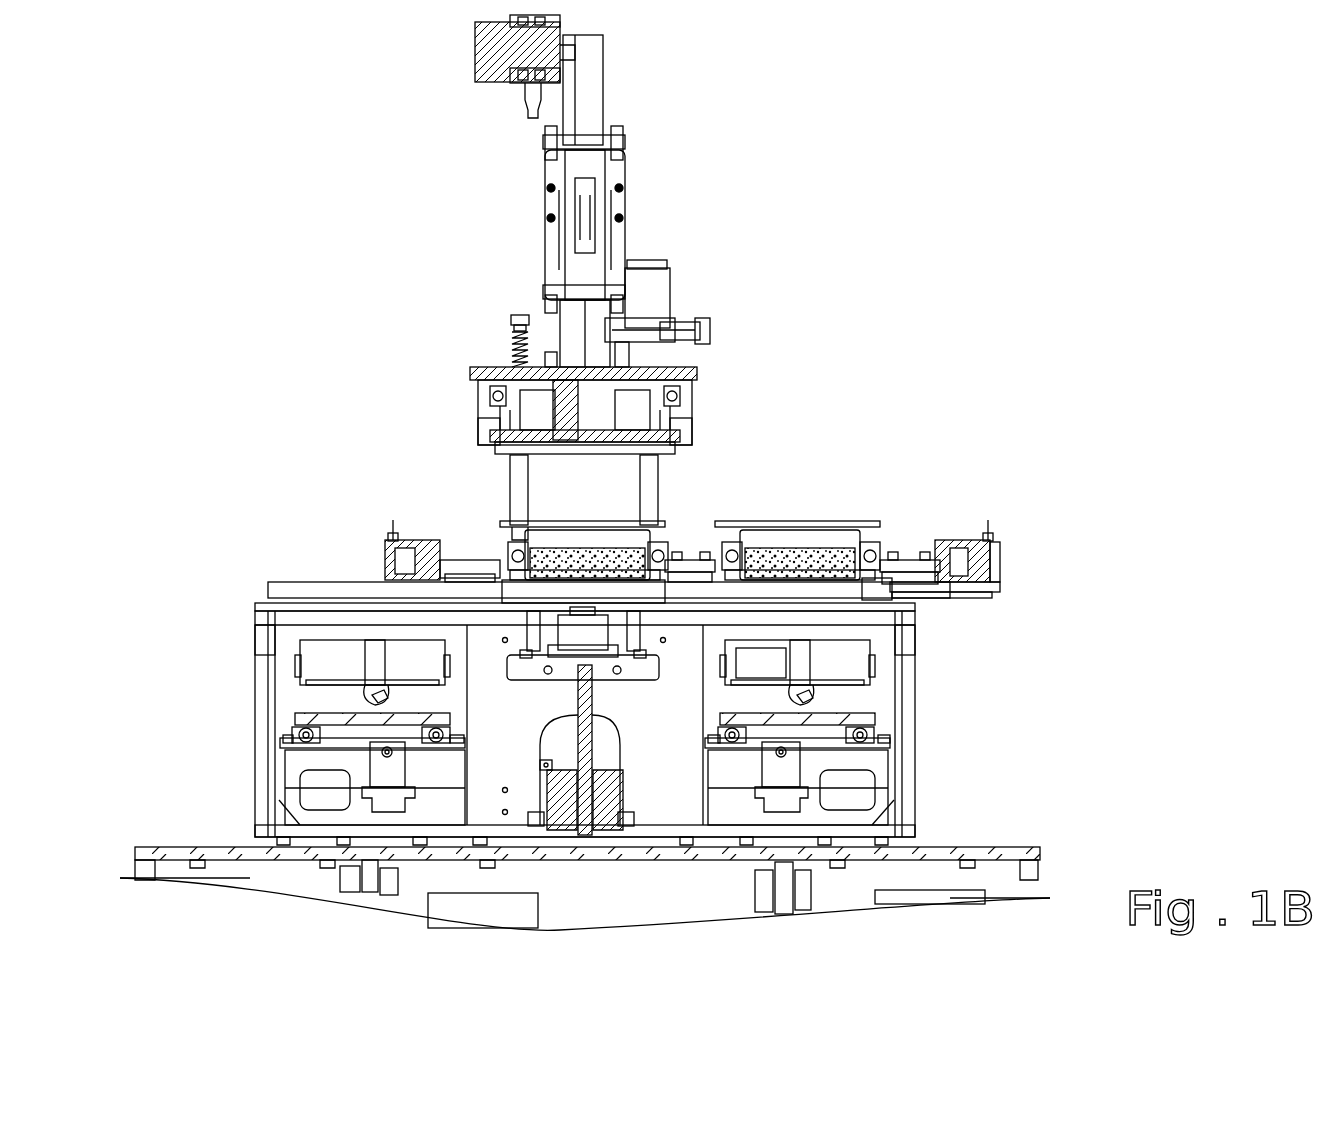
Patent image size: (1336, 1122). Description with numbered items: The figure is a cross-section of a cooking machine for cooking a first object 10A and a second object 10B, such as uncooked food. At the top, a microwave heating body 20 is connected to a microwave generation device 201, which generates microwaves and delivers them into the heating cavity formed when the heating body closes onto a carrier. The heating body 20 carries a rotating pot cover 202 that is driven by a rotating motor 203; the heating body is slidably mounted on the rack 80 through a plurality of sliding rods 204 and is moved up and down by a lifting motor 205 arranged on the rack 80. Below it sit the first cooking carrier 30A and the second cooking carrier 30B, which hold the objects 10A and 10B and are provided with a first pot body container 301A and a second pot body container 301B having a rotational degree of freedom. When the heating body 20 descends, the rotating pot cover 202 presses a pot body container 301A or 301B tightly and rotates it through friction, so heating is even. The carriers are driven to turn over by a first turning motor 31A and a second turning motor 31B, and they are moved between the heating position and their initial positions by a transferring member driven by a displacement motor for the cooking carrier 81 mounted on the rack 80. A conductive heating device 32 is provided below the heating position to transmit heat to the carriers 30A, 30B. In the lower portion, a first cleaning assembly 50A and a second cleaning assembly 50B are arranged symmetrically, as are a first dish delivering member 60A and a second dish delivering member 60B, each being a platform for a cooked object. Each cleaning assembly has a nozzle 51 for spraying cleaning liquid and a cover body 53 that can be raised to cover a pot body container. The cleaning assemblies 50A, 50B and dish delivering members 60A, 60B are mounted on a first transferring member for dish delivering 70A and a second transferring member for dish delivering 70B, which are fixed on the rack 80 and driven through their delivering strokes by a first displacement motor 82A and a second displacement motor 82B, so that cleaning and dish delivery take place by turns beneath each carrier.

The microwave generation device 201 is at (600, 90).
The rotating motor 203 is at (665, 292).
The rotating pot cover 202 is at (690, 392).
The sliding rods 204 is at (652, 470).
The microwave heating body 20 is at (468, 426).
The second object 10B is at (596, 556).
The first object 10A is at (800, 556).
The second pot body container 301B is at (652, 572).
The first pot body container 301A is at (868, 566).
The second cooking carrier 30B is at (656, 572).
The first cooking carrier 30A is at (868, 574).
The second turning motor 31B is at (398, 560).
The first turning motor 31A is at (955, 560).
The conductive heating device 32 is at (520, 598).
The displacement motor for the cooking carrier 81 is at (1000, 588).
The nozzle 51 is at (808, 650).
The second cleaning assembly 50B is at (296, 660).
The first cleaning assembly 50A is at (872, 660).
The cover body 53 is at (850, 668).
The second dish delivering member 60B is at (304, 713).
The first dish delivering member 60A is at (862, 716).
The second transferring member for dish delivering 70B is at (298, 740).
The first transferring member for dish delivering 70A is at (880, 740).
The second displacement motor 82B is at (390, 766).
The first displacement motor 82A is at (785, 760).
The lifting motor 205 is at (560, 742).
The rack 80 is at (265, 815).